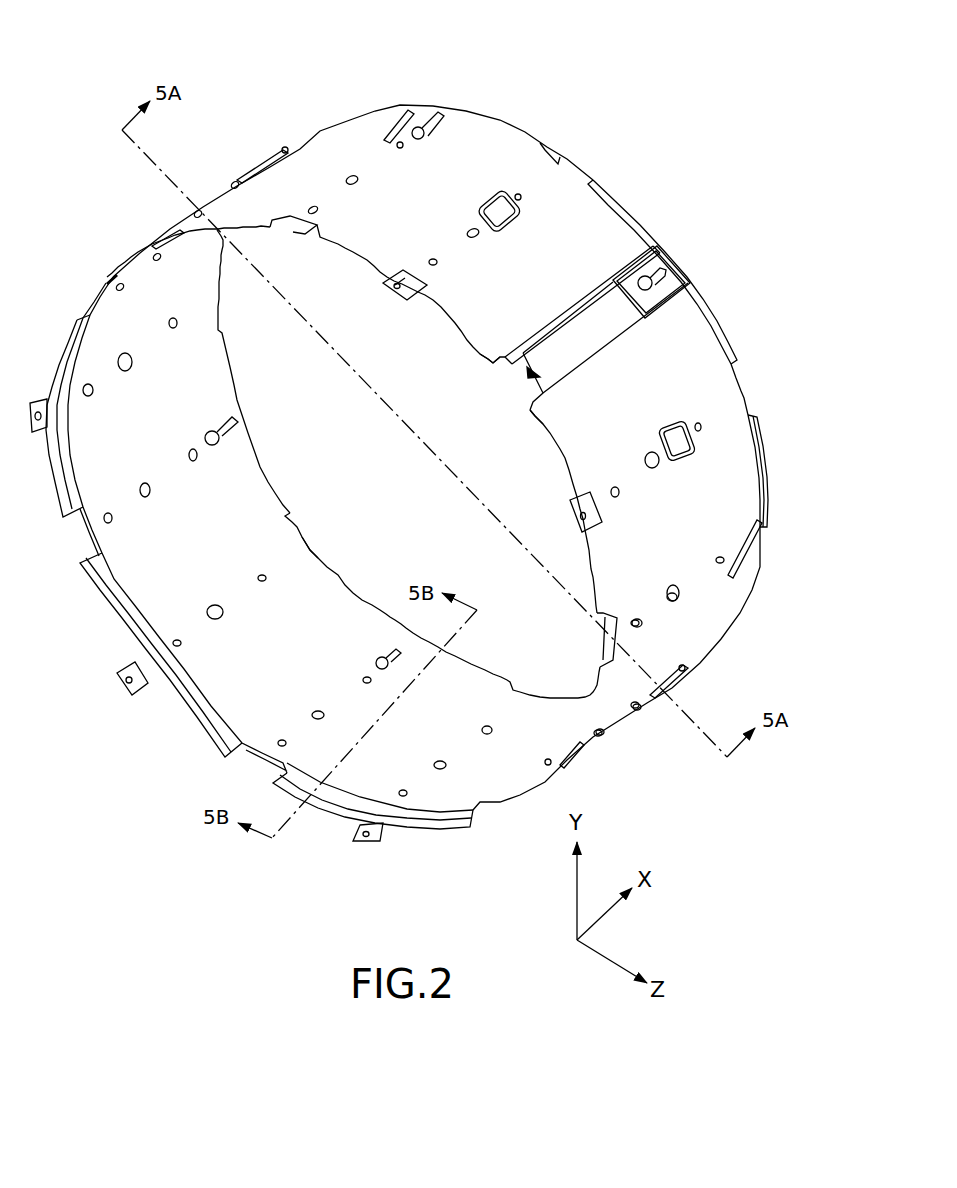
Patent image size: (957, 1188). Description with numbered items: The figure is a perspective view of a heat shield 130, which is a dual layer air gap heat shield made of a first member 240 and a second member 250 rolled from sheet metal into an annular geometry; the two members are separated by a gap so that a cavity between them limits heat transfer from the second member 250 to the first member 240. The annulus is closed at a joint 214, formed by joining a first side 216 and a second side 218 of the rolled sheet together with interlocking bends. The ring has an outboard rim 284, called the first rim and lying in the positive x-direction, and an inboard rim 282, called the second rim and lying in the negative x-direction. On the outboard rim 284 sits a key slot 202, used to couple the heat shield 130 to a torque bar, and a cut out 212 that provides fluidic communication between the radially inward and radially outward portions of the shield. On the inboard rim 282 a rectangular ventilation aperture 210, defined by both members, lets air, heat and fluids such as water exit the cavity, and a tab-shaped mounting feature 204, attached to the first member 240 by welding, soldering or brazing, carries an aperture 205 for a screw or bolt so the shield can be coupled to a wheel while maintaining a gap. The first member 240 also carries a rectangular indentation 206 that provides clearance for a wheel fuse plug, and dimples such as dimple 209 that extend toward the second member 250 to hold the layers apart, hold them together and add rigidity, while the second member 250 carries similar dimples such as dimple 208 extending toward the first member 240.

The heat shield 130 is at (637, 93).
The key slot 202 is at (667, 267).
The mounting feature 204 is at (130, 705).
The aperture 205 is at (130, 667).
The indentation 206 is at (500, 213).
The dimple 208 is at (213, 605).
The dimple 209 is at (650, 470).
The ventilation aperture 210 is at (293, 237).
The cut out 212 is at (740, 393).
The joint 214 is at (587, 320).
The first side 216 is at (480, 364).
The second side 218 is at (530, 425).
The first member 240 is at (473, 283).
The second member 250 is at (310, 593).
The inboard rim 282 is at (213, 752).
The outboard rim 284 is at (715, 300).